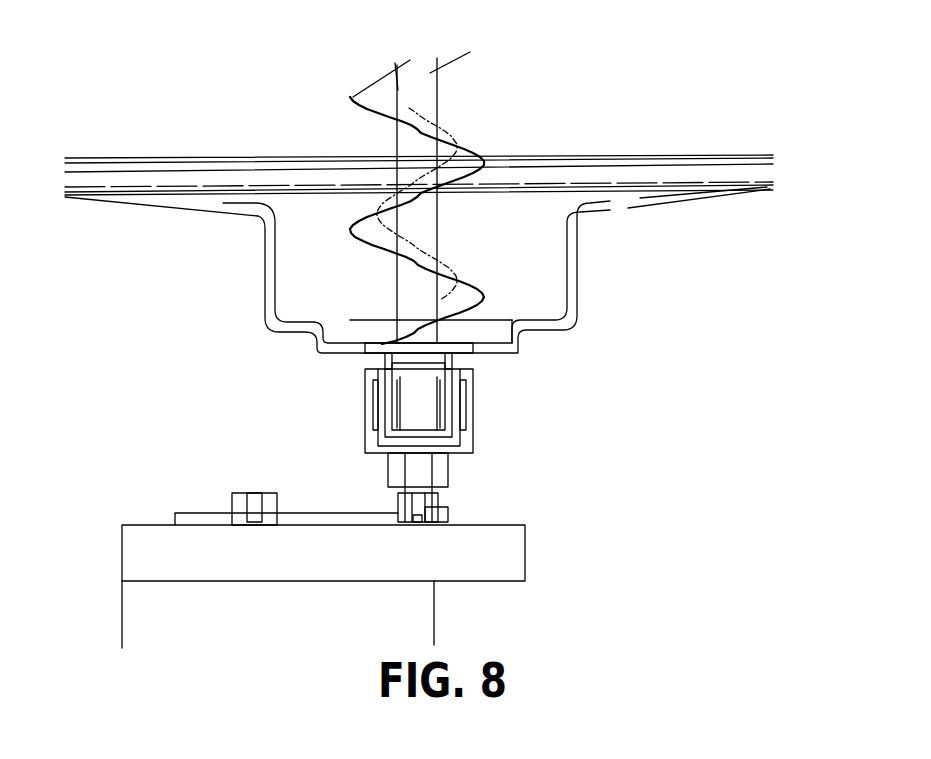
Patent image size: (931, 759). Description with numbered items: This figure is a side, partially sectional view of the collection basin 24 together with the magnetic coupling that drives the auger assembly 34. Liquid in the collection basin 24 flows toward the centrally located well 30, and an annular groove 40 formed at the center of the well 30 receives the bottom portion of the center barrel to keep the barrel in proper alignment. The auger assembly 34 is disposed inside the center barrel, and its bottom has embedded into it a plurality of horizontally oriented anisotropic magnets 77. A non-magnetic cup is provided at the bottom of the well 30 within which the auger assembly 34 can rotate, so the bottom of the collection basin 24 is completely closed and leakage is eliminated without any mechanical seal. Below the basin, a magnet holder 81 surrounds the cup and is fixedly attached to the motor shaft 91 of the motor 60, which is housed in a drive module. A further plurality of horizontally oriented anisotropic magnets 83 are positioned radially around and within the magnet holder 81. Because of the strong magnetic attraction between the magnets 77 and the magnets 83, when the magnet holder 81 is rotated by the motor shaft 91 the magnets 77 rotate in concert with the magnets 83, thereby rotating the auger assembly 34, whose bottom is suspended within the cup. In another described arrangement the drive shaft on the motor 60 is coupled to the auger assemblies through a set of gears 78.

The collection basin 24 is at (697, 202).
The auger assembly 34 is at (466, 138).
The well 30 is at (263, 257).
The annular groove 40 is at (508, 332).
The set of gears 78 is at (380, 361).
The magnet holder 81 is at (362, 437).
The anisotropic magnets 77 is at (441, 382).
The anisotropic magnets 83 is at (372, 393).
The motor shaft 91 is at (440, 466).
The motor 60 is at (530, 545).